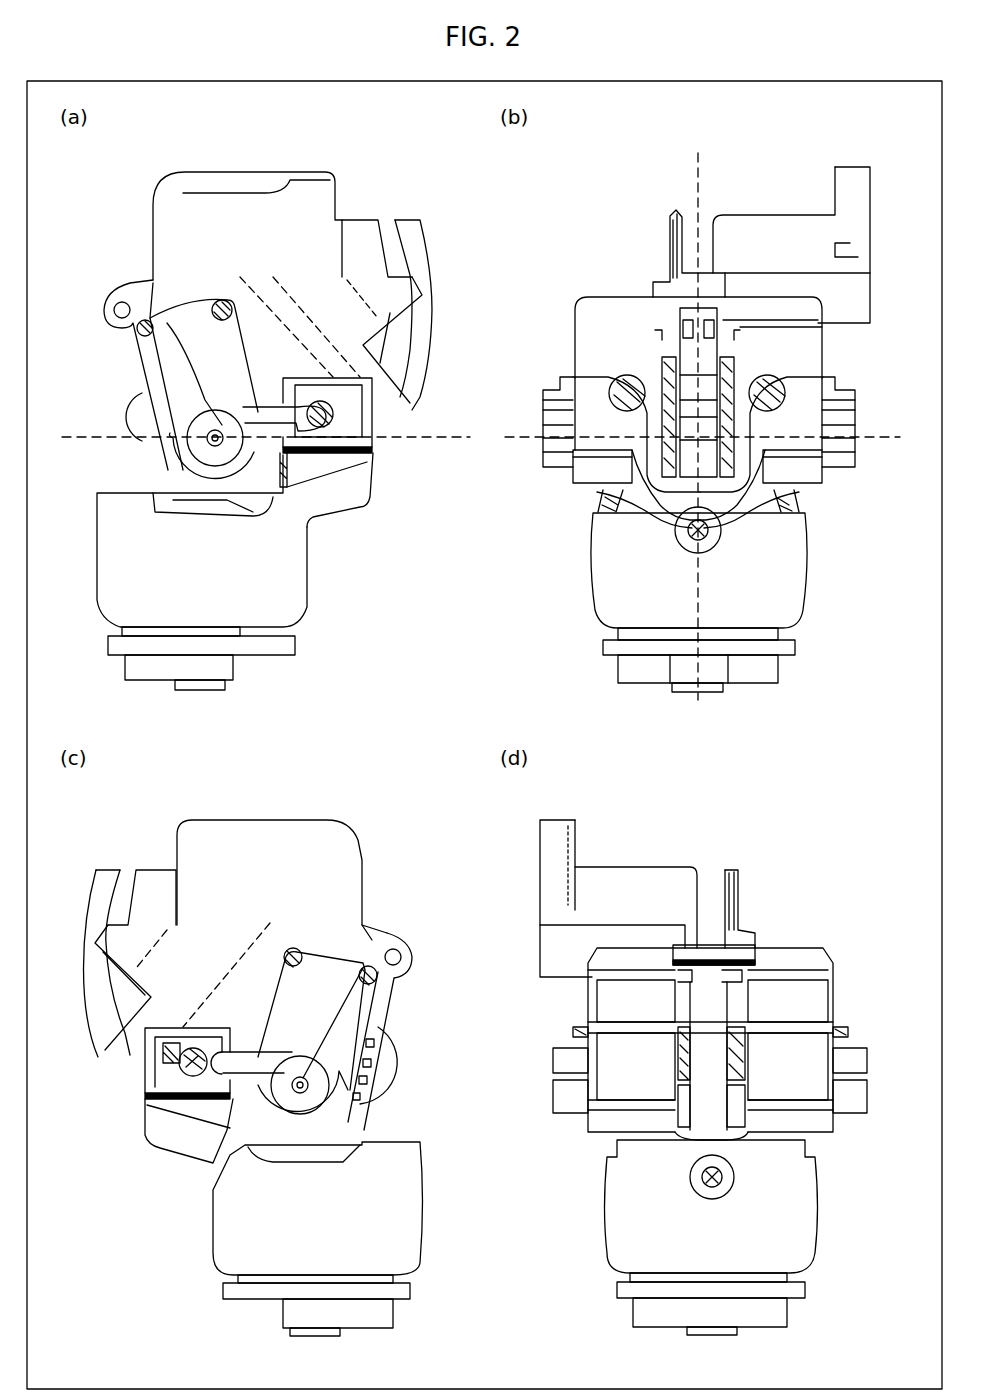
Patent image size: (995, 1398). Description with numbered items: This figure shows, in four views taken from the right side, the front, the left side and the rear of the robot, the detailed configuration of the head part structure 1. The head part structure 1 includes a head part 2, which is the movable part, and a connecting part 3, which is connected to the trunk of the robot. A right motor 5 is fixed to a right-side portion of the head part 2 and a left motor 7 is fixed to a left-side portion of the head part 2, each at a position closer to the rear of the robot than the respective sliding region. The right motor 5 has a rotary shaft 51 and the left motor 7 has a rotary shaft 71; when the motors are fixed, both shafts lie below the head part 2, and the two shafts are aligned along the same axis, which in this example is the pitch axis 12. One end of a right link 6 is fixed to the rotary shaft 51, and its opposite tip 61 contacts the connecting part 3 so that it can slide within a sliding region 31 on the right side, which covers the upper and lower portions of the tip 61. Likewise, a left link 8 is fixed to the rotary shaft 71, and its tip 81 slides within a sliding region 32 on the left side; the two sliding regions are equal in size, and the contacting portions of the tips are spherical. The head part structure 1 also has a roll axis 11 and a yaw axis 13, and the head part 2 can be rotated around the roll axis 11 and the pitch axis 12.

The head part structure 1 is at (424, 174).
The head part 2 is at (477, 649).
The connecting part 3 is at (100, 568).
The right motor 5 is at (145, 357).
The right link 6 is at (205, 462).
The left motor 7 is at (822, 352).
The left link 8 is at (348, 1107).
The roll axis 11 is at (96, 430).
The pitch axis 12 is at (878, 433).
The yaw axis 13 is at (693, 176).
The sliding region 31 is at (375, 408).
The sliding region 32 is at (783, 423).
The rotary shaft 51 is at (213, 432).
The tip 61 is at (370, 425).
The rotary shaft 71 is at (369, 972).
The tip 81 is at (203, 1040).